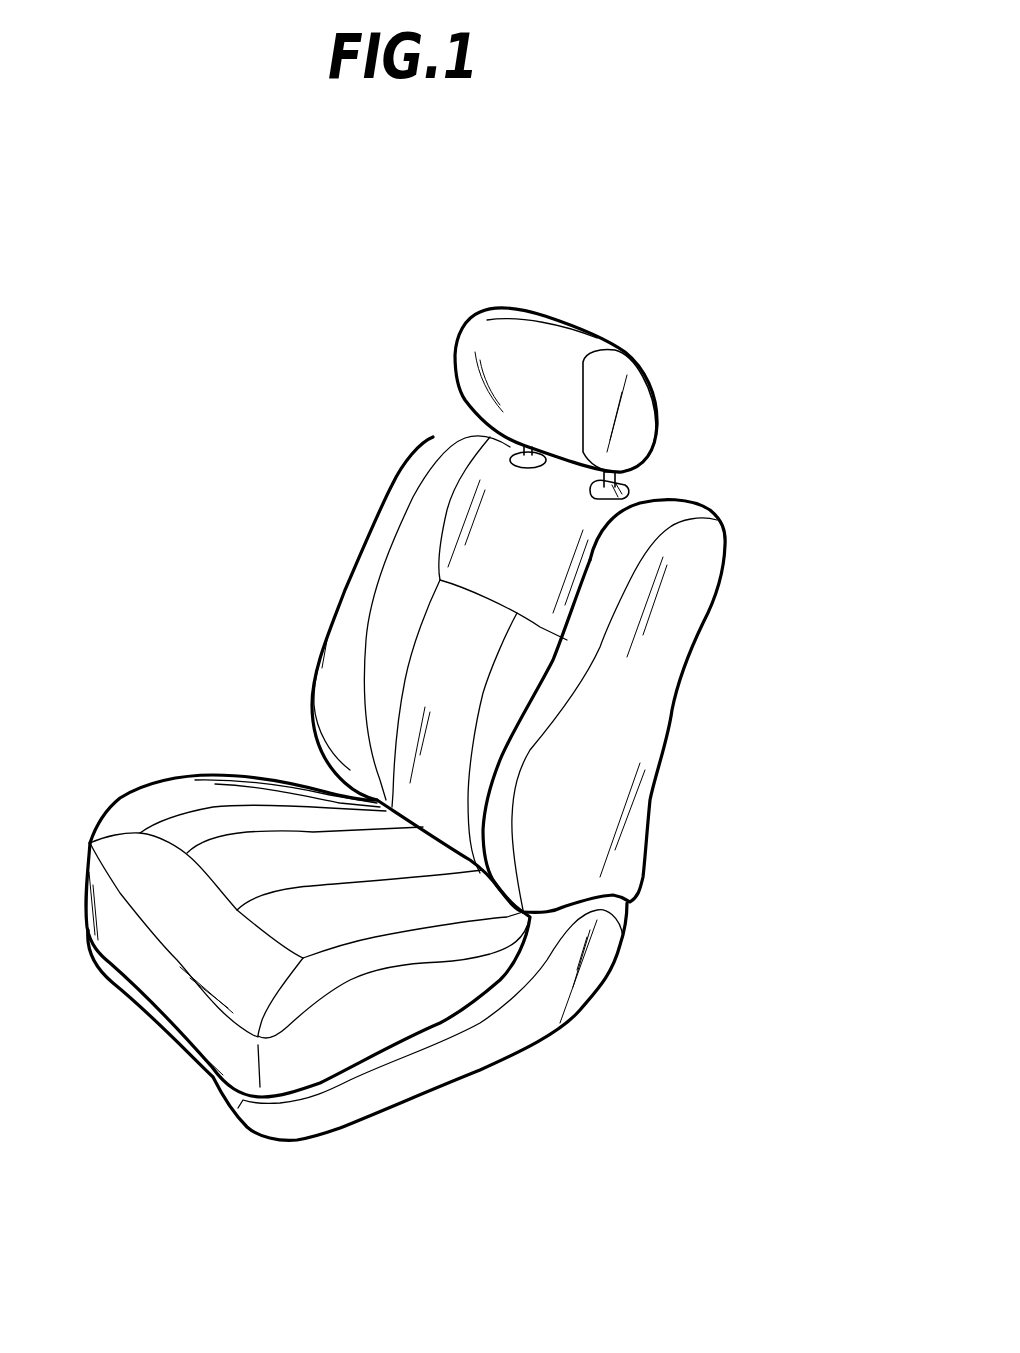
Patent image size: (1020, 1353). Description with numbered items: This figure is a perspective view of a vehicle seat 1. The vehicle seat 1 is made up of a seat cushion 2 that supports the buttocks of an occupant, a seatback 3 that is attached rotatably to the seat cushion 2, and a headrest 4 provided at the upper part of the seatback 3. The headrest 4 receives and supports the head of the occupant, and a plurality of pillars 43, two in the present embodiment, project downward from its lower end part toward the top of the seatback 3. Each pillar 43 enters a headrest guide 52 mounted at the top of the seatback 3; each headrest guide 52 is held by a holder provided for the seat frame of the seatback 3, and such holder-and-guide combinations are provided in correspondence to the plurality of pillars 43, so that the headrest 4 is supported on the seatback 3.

The vehicle seat 1 is at (219, 283).
The seat cushion 2 is at (160, 797).
The seatback 3 is at (648, 738).
The headrest 4 is at (470, 362).
The pillars 43 is at (525, 451).
The headrest guide 52 is at (520, 462).